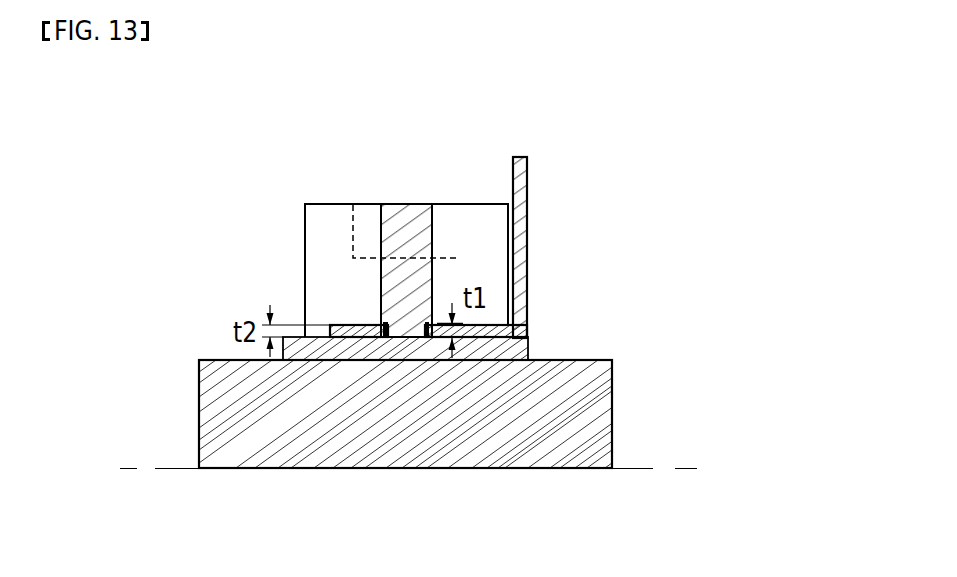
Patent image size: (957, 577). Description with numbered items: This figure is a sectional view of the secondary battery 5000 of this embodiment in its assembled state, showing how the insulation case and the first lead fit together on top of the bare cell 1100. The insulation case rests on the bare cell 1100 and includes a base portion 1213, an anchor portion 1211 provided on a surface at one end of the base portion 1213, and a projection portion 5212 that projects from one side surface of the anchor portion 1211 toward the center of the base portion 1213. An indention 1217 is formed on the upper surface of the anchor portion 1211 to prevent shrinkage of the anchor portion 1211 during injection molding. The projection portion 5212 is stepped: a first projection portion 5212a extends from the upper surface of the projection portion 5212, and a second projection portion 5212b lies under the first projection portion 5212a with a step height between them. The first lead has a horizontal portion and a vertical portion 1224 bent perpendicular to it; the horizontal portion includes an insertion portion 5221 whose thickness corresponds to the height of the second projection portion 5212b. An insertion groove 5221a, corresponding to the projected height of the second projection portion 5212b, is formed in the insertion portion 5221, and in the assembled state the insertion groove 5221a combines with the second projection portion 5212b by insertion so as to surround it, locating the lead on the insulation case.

The secondary battery 5000 is at (647, 112).
The bare cell 1100 is at (507, 470).
The insertion portion 5221 is at (488, 326).
The insertion groove 5221a is at (421, 340).
The base portion 1213 is at (323, 353).
The anchor portion 1211 is at (318, 220).
The indention 1217 is at (357, 224).
The vertical portion 1224 is at (527, 202).
The projection portion 5212 is at (177, 255).
The first projection portion 5212a is at (385, 278).
The second projection portion 5212b is at (367, 325).